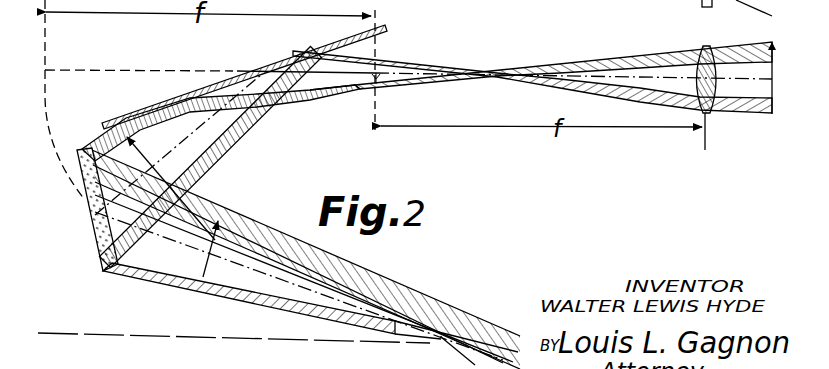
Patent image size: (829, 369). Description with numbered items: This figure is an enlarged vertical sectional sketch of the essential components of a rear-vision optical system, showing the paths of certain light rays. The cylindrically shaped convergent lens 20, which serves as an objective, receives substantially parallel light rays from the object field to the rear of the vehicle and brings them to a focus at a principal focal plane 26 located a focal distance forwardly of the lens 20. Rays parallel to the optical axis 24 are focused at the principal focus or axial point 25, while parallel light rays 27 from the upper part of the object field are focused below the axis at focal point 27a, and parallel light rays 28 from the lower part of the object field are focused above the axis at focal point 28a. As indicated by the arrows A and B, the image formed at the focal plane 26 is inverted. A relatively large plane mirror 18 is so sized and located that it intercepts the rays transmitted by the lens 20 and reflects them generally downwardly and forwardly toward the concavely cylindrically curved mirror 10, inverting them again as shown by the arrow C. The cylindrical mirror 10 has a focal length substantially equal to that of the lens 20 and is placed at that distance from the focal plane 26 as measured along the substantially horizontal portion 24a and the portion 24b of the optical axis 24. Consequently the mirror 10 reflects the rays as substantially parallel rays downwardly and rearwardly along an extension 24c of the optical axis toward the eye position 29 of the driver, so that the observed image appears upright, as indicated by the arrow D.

The concavely cylindrically curved mirror 10 is at (95, 201).
The plane mirror 18 is at (236, 81).
The cylindrically shaped convergent lens 20 is at (697, 73).
The optical axis 24 is at (740, 84).
The substantially horizontal portion of optical axis 24a is at (323, 76).
The portion of optical axis 24b is at (196, 133).
The extension of optical axis 24c is at (190, 257).
The principal focus or axial point 25 is at (362, 79).
The principal focal plane 26 is at (377, 126).
The parallel light rays from the upper part of the object field 27 is at (766, 45).
The focal point 27a is at (377, 83).
The parallel light rays from the lower part of the object field 28 is at (757, 112).
The focal point 28a is at (378, 60).
The eye position 29 is at (443, 334).
The arrow A is at (772, 73).
The arrow B is at (392, 64).
The arrow C is at (198, 177).
The arrow D is at (208, 246).